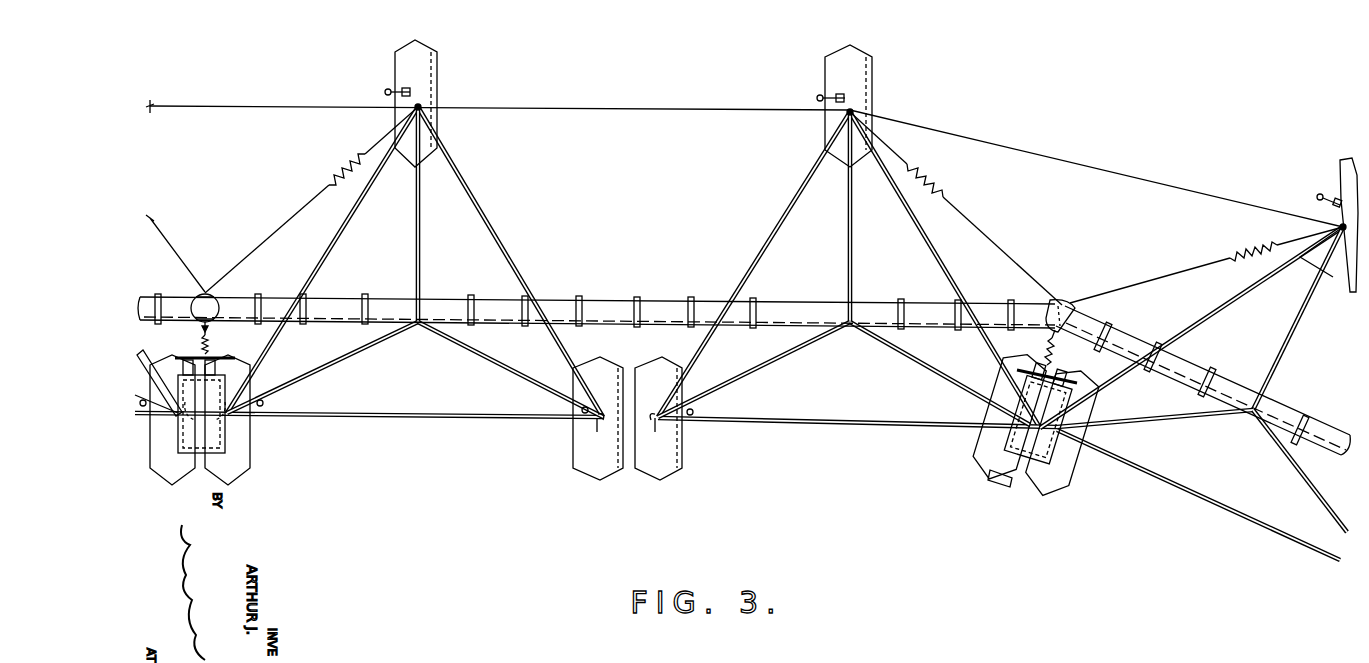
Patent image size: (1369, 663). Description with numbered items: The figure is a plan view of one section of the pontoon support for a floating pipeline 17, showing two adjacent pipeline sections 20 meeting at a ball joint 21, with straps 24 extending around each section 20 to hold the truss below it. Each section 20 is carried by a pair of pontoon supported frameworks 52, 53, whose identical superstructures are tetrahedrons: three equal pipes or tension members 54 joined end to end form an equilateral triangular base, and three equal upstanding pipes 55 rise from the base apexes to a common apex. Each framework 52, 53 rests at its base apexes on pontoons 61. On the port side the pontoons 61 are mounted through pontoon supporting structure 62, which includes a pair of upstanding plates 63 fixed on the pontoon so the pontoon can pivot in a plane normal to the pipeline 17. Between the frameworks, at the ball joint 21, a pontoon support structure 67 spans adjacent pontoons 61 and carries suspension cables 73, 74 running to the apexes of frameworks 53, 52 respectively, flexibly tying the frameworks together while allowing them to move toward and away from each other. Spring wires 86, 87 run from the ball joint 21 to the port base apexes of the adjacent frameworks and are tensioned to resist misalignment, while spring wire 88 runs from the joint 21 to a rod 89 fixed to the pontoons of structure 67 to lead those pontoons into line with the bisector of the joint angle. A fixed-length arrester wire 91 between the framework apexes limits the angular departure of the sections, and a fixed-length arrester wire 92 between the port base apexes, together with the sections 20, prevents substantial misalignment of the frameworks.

The pipeline 17 is at (744, 345).
The pipeline section 20 is at (650, 304).
The ball joint 21 is at (215, 293).
The straps 24 is at (582, 310).
The pontoon supported framework 52 is at (741, 332).
The pontoon supported framework 53 is at (772, 204).
The tension members 54 is at (334, 242).
The upstanding pipes 55 is at (422, 246).
The pontoon 61 is at (398, 62).
The pontoon supporting structure 62 is at (428, 88).
The upstanding plates 63 is at (604, 414).
The pontoon support structure 67 is at (184, 354).
The suspension cable 73 is at (627, 412).
The suspension cable 74 is at (205, 421).
The spring wire 86 is at (166, 240).
The spring wire 87 is at (310, 204).
The spring wire 88 is at (210, 347).
The rod 89 is at (230, 357).
The arrester wire 91 is at (1078, 166).
The arrester wire 92 is at (634, 108).